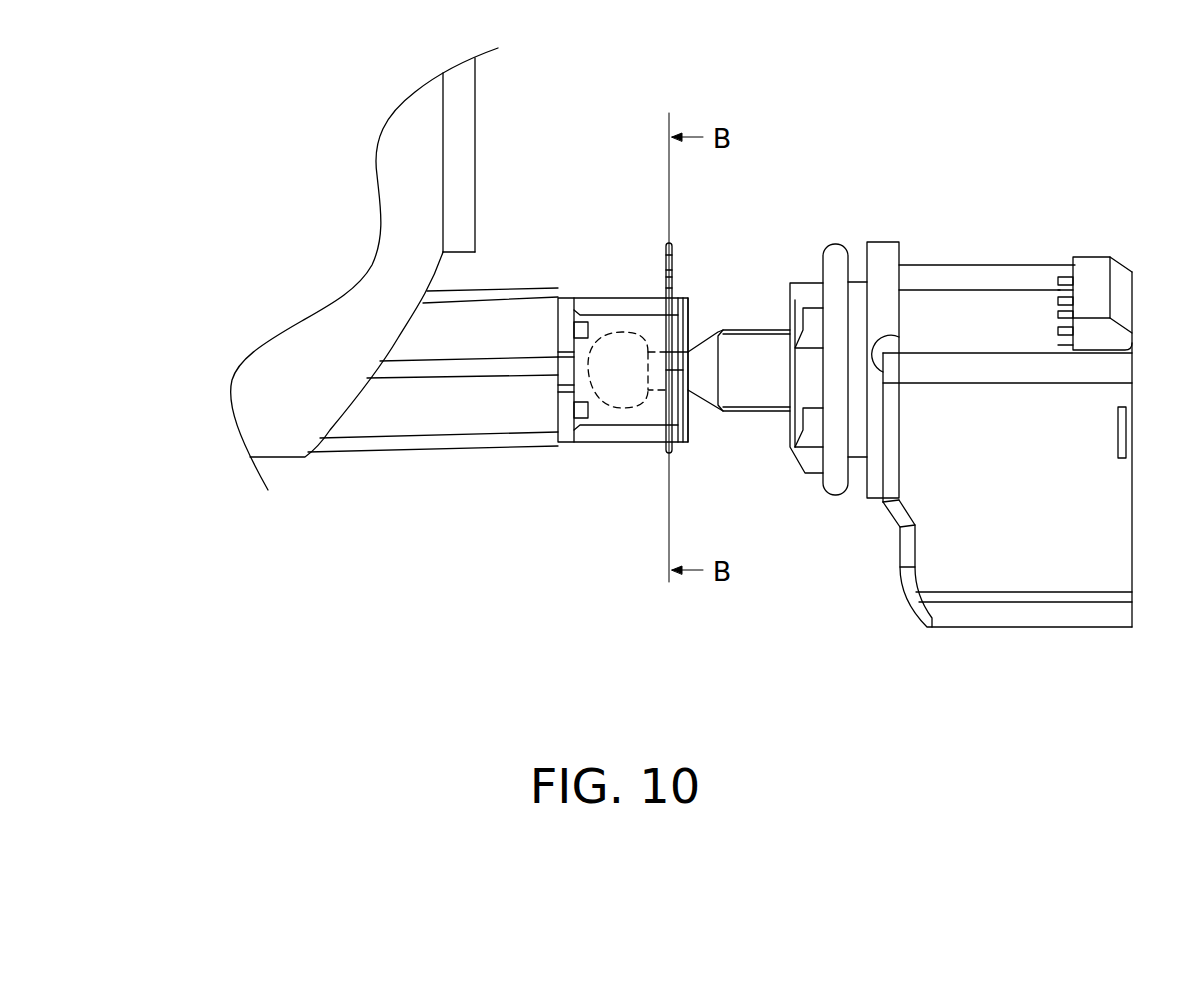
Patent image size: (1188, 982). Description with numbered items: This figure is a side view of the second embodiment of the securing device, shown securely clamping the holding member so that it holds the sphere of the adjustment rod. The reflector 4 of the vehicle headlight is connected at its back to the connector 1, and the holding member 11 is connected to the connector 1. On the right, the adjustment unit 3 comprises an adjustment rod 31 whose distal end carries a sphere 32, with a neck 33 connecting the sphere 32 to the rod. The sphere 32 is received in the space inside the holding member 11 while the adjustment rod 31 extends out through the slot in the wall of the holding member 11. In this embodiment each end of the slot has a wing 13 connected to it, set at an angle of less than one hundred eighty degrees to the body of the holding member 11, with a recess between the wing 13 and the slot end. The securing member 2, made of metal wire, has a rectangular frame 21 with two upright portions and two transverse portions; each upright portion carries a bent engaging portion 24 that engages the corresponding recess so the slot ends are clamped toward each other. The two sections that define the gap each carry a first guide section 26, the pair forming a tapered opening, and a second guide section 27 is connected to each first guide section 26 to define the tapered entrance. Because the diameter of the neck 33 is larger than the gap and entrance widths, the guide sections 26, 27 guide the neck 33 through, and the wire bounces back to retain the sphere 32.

The connector 1 is at (582, 293).
The holding member 11 is at (617, 322).
The wing 13 is at (684, 416).
The securing member 2 is at (665, 236).
The frame 21 is at (680, 352).
The bent engaging portion 24 is at (668, 370).
The first guide section 26 is at (667, 277).
The second guide section 27 is at (675, 255).
The adjustment unit 3 is at (890, 519).
The adjustment rod 31 is at (739, 383).
The sphere 32 is at (617, 393).
The neck 33 is at (659, 377).
The reflector 4 is at (397, 455).